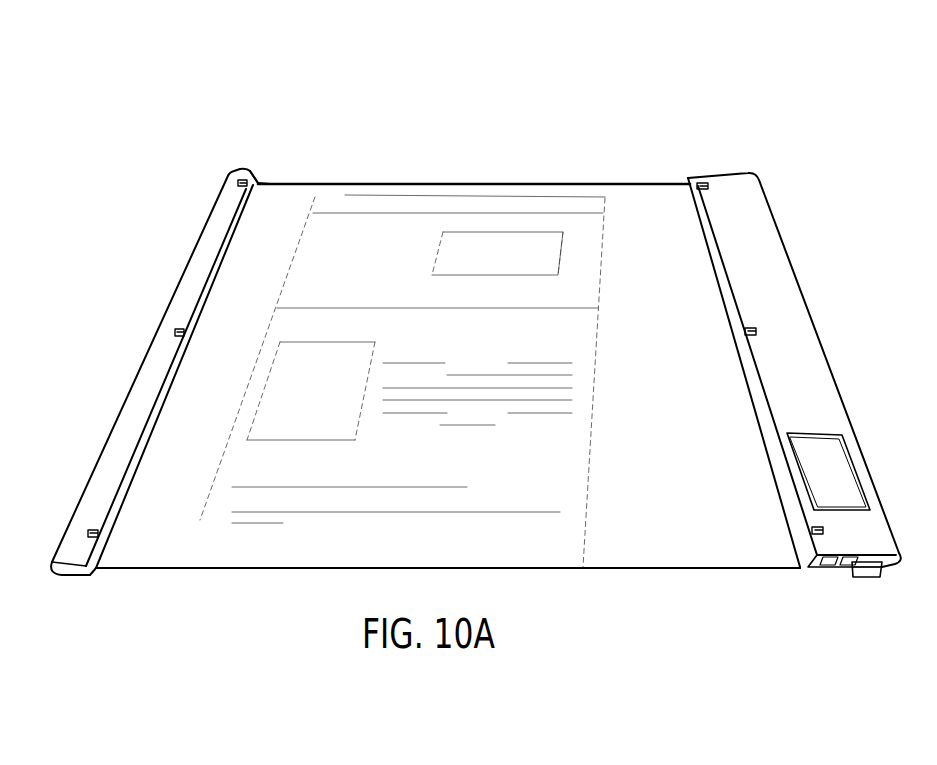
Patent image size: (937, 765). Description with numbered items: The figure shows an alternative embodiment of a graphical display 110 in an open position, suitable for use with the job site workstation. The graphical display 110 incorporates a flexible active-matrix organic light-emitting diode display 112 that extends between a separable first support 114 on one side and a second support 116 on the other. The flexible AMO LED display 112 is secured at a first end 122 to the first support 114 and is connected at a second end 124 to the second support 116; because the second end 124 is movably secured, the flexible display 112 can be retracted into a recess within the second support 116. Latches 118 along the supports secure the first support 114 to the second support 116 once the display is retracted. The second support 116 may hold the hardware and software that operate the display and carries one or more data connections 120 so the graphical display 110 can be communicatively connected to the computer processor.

The graphical display 110 is at (520, 129).
The flexible AMO LED display 112 is at (396, 187).
The first support 114 is at (212, 237).
The second support 116 is at (752, 205).
The latches 118 is at (699, 186).
The data connections 120 is at (862, 595).
The first end 122 is at (258, 183).
The second end 124 is at (789, 572).